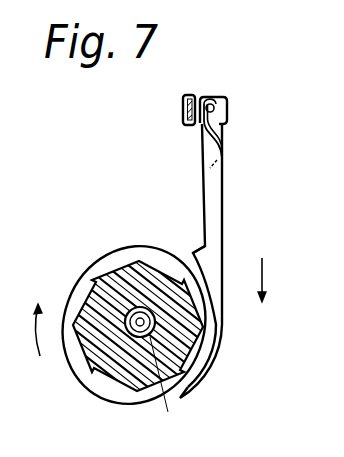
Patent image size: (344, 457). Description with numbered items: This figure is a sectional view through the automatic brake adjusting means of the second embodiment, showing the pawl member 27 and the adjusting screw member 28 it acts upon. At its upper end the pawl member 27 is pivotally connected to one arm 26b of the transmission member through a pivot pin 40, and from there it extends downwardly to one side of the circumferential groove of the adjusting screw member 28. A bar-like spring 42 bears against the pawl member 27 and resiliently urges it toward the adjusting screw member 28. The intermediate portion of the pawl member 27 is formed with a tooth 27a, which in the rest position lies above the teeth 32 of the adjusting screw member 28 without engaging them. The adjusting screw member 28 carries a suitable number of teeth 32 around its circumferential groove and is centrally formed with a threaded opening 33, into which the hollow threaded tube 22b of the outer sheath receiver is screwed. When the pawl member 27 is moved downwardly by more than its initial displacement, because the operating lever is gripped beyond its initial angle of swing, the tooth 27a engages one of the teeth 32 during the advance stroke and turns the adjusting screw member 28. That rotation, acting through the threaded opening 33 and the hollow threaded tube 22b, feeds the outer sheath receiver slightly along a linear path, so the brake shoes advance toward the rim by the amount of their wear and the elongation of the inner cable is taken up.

The hollow threaded tube 22b is at (171, 386).
The arm of the transmission member 26b is at (182, 112).
The pawl member 27 is at (224, 240).
The tooth 27a is at (194, 252).
The adjusting screw member 28 is at (104, 252).
The teeth 32 is at (93, 366).
The threaded opening 33 is at (132, 333).
The pivot pin 40 is at (214, 104).
The bar-like spring 42 is at (227, 156).